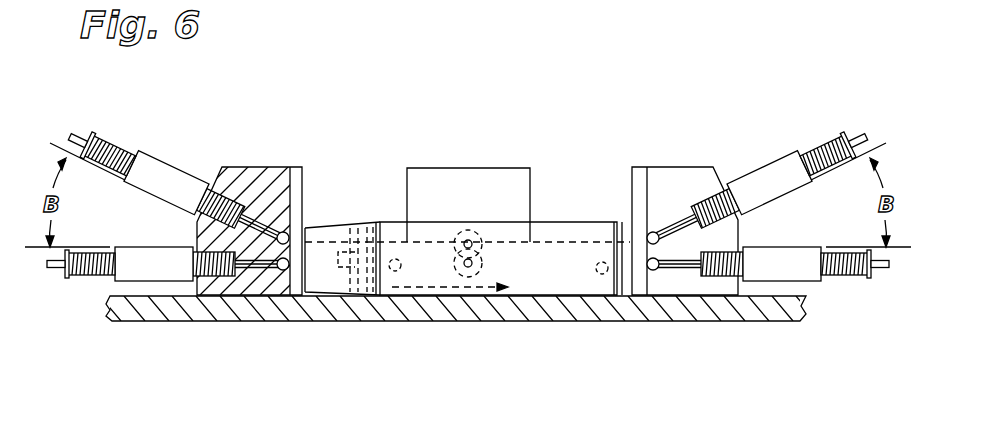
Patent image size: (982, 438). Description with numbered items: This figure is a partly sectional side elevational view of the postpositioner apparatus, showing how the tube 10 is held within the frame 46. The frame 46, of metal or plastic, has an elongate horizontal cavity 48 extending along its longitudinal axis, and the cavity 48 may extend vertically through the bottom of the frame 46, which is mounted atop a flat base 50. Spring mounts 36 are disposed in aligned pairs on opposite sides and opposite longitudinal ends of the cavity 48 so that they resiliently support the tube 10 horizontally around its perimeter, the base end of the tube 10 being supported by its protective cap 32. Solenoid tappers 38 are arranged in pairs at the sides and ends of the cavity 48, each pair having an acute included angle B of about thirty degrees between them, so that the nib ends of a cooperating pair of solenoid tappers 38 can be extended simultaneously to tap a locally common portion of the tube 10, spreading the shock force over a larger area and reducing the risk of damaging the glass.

The tube 10 is at (553, 222).
The protective cap 32 is at (306, 228).
The spring mounts 36 is at (398, 262).
The solenoid tappers 38 is at (172, 166).
The frame 46 is at (668, 167).
The cavity 48 is at (633, 296).
The base 50 is at (453, 321).